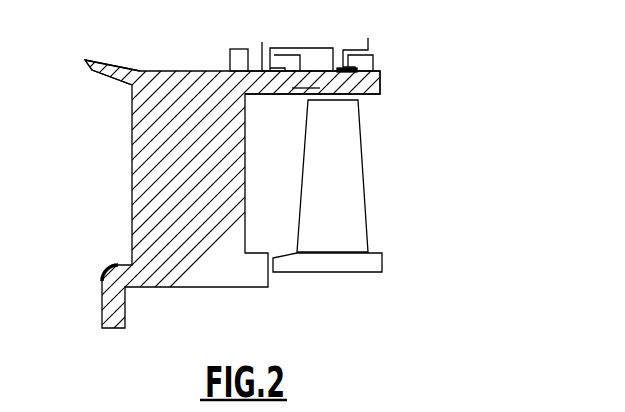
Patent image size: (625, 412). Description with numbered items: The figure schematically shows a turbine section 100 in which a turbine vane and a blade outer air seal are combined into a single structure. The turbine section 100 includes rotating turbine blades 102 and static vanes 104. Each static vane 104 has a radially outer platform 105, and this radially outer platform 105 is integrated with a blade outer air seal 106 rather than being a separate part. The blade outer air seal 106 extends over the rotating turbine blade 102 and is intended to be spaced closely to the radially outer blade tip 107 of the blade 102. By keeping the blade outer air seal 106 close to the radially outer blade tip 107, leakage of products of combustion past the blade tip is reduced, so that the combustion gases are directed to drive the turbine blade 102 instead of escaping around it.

The turbine section 100 is at (433, 65).
The rotating turbine blade 102 is at (353, 228).
The static vane 104 is at (160, 192).
The radially outer platform 105 is at (163, 77).
The blade outer air seal 106 is at (353, 82).
The radially outer blade tip 107 is at (302, 87).